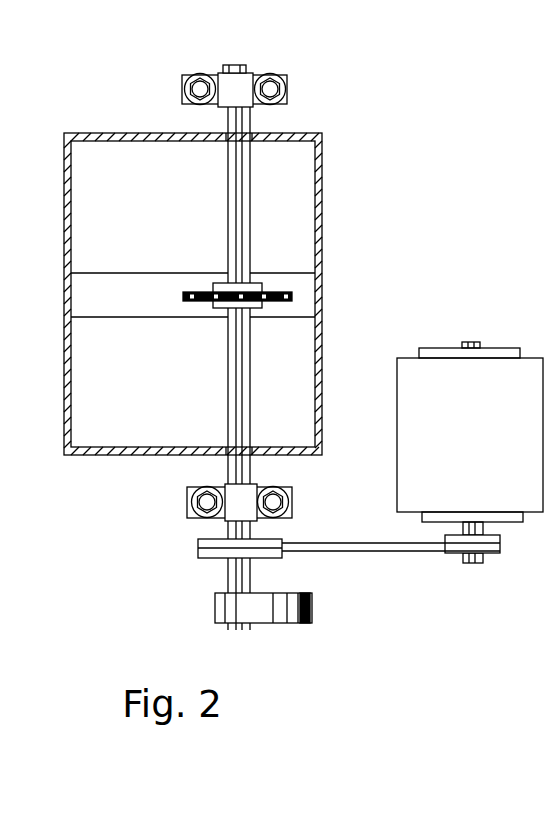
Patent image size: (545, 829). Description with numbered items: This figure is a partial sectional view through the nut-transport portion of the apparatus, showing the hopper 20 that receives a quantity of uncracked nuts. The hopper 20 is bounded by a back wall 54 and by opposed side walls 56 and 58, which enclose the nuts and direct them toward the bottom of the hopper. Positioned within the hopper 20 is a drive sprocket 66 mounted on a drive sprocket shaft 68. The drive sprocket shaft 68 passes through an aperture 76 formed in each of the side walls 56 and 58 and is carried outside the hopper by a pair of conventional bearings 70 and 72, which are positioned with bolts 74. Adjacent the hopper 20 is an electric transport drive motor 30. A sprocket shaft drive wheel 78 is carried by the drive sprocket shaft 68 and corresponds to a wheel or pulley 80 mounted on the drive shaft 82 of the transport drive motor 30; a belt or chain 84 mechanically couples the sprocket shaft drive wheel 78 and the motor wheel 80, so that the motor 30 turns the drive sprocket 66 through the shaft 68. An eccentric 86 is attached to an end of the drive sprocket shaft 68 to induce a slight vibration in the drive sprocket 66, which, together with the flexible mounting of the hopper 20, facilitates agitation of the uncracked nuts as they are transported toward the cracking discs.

The hopper 20 is at (221, 299).
The transport drive motor 30 is at (477, 444).
The back wall 54 is at (68, 378).
The side wall 56 is at (113, 455).
The side wall 58 is at (123, 133).
The drive sprocket 66 is at (200, 292).
The drive sprocket shaft 68 is at (236, 196).
The bearing 70 is at (243, 84).
The bearing 72 is at (245, 500).
The bolts 74 is at (284, 90).
The aperture 76 is at (227, 150).
The sprocket shaft drive wheel 78 is at (207, 558).
The wheel or pulley 80 is at (455, 553).
The drive shaft 82 is at (478, 528).
The belt or chain 84 is at (313, 545).
The eccentric 86 is at (267, 612).